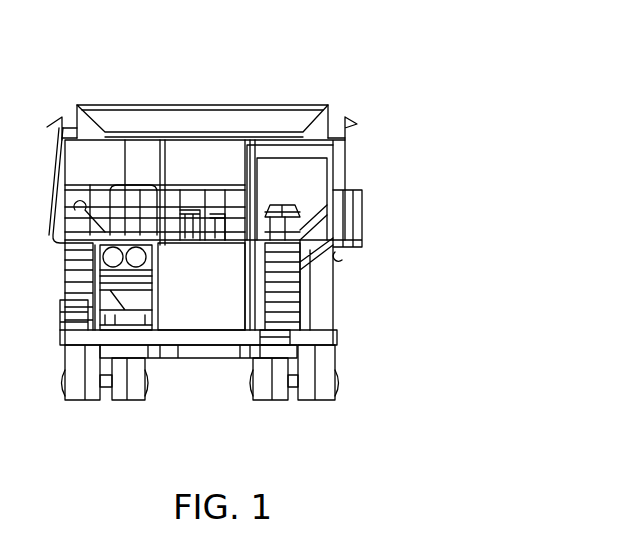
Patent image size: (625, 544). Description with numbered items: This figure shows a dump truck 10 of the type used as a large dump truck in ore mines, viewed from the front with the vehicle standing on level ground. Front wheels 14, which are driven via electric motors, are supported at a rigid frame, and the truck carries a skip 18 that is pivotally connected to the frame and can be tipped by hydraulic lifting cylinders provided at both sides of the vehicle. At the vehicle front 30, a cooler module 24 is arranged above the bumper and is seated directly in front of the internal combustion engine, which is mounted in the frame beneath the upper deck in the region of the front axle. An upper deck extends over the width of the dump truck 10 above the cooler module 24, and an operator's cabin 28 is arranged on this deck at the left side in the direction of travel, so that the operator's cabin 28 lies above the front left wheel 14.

The dump truck 10 is at (437, 92).
The front wheels 14 is at (75, 388).
The skip 18 is at (288, 123).
The cooler module 24 is at (188, 313).
The operator's cabin 28 is at (315, 180).
The vehicle front 30 is at (308, 302).